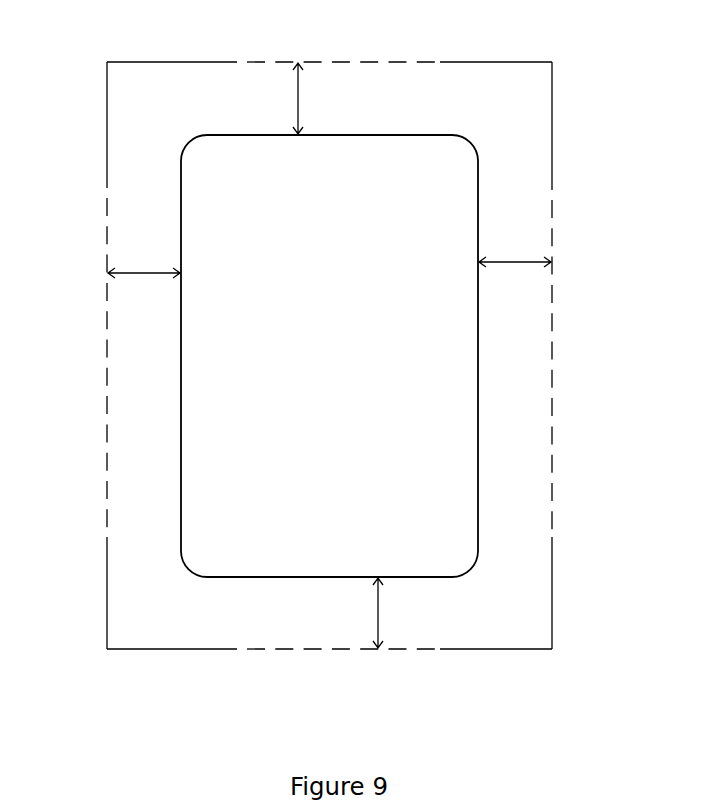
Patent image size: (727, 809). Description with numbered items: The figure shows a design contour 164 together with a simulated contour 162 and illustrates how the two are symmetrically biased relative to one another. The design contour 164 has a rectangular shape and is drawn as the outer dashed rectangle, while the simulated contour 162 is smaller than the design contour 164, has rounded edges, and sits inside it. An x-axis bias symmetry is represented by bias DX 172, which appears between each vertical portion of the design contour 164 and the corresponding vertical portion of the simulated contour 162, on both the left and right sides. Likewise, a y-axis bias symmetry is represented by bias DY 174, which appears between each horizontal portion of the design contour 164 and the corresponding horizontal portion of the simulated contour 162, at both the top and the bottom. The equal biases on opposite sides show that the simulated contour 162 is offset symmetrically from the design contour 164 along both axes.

The simulated contour 162 is at (275, 137).
The design contour 164 is at (330, 362).
The bias DX 172 is at (329, 284).
The bias DY 174 is at (373, 355).